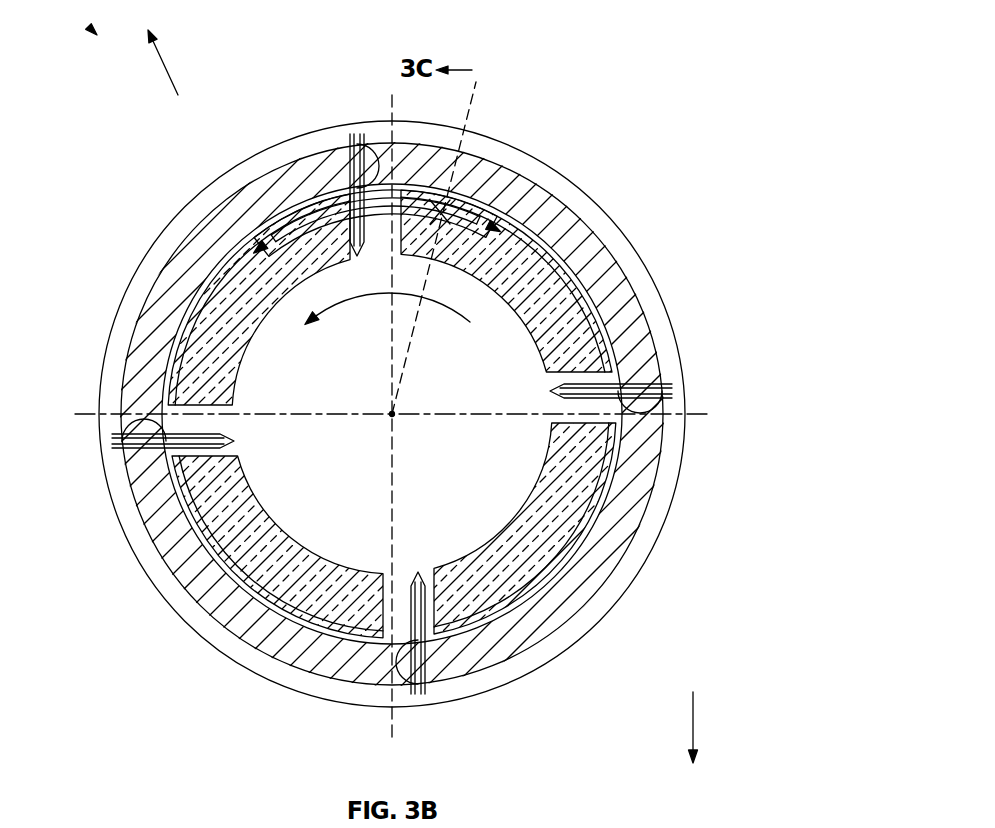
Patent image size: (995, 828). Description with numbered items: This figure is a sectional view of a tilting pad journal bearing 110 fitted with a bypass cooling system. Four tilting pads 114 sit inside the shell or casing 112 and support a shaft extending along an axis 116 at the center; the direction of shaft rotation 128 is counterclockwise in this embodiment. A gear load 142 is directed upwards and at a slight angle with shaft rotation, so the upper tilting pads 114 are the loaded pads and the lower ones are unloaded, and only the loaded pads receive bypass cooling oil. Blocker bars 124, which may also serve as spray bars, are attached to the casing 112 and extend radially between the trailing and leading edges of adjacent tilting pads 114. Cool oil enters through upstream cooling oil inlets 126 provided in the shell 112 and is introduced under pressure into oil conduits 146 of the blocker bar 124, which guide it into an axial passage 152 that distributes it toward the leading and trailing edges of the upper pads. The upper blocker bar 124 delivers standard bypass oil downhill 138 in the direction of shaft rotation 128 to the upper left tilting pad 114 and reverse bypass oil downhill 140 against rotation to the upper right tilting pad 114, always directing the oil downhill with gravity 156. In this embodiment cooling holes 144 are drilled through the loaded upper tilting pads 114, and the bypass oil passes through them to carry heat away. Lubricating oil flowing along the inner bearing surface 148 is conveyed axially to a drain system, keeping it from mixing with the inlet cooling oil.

The tilting pad journal bearing 110 is at (88, 27).
The casing 112 is at (332, 134).
The tilting pad 114 is at (215, 318).
The axis 116 is at (391, 413).
The blocker bar 124 is at (345, 196).
The cooling oil inlet 126 is at (356, 140).
The direction of shaft rotation 128 is at (372, 300).
The standard bypass oil downhill 138 is at (268, 212).
The reverse bypass oil downhill 140 is at (440, 183).
The gear load 142 is at (165, 68).
The cooling hole 144 is at (505, 168).
The oil conduit 146 is at (318, 162).
The inner bearing surface 148 is at (262, 354).
The axial passage 152 is at (225, 300).
The gravity 156 is at (696, 722).